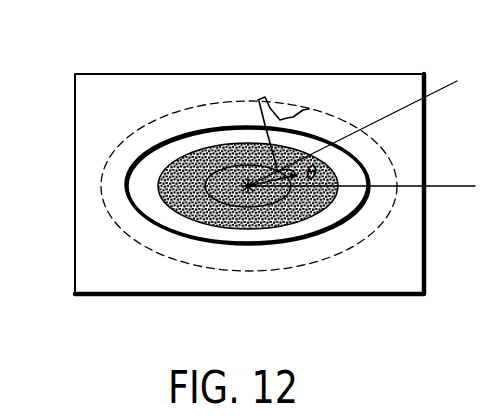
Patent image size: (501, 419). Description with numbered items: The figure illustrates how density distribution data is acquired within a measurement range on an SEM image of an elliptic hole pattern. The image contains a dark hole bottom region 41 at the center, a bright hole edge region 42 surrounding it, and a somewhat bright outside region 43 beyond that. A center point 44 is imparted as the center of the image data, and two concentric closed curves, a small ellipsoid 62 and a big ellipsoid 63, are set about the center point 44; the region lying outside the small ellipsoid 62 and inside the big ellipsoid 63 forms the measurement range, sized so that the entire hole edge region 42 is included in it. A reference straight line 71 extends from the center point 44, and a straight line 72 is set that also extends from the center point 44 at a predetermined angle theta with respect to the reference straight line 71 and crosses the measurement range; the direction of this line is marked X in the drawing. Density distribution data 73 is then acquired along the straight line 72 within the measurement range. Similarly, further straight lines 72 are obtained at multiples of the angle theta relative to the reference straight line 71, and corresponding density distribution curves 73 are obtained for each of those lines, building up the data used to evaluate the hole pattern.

The hole bottom region 41 is at (181, 212).
The hole edge region 42 is at (134, 198).
The outside region 43 is at (86, 167).
The center point 44 is at (248, 186).
The small ellipsoid 62 is at (276, 200).
The big ellipsoid 63 is at (122, 141).
The reference straight line 71 is at (446, 185).
The straight line 72 is at (434, 92).
The density distribution data 73 is at (268, 102).
The X axis X is at (469, 83).